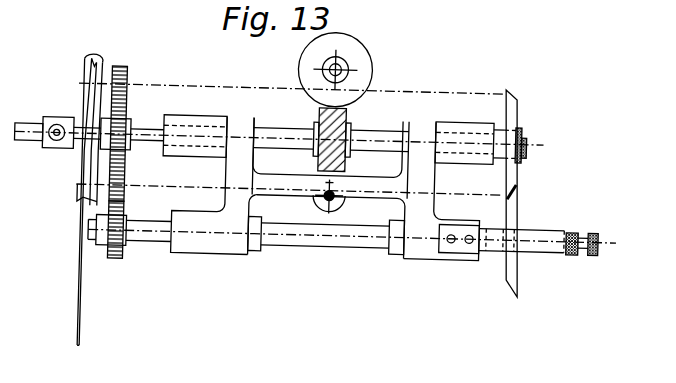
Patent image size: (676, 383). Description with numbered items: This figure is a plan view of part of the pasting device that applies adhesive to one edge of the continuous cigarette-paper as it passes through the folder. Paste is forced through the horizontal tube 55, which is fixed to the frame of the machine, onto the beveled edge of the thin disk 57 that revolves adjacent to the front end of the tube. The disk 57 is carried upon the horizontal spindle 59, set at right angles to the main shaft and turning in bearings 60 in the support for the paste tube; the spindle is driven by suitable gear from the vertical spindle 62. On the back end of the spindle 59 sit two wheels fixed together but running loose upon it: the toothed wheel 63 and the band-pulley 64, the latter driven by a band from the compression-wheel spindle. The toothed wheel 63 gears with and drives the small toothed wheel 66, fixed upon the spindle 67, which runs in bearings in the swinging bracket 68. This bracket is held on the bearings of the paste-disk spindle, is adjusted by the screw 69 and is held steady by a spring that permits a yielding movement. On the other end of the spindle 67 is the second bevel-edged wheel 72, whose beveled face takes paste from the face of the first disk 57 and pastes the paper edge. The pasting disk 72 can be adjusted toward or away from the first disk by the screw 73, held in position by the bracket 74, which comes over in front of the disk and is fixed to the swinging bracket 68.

The horizontal tube 55 is at (260, 83).
The thin disk 57 is at (517, 86).
The horizontal spindle 59 is at (369, 117).
The bearings 60 is at (222, 113).
The vertical spindle 62 is at (343, 61).
The toothed wheel 63 is at (130, 65).
The band-pulley 64 is at (104, 61).
The small toothed wheel 66 is at (128, 255).
The spindle 67 is at (291, 240).
The swinging bracket 68 is at (228, 169).
The screw 69 is at (340, 191).
The second bevel-edged wheel 72 is at (523, 256).
The screw 73 is at (591, 220).
The bracket 74 is at (519, 192).